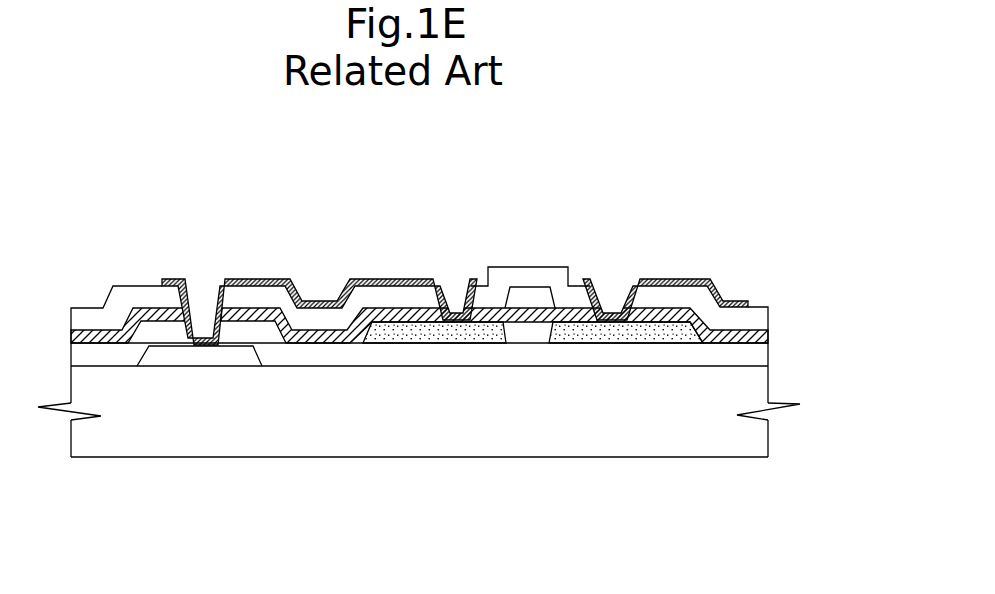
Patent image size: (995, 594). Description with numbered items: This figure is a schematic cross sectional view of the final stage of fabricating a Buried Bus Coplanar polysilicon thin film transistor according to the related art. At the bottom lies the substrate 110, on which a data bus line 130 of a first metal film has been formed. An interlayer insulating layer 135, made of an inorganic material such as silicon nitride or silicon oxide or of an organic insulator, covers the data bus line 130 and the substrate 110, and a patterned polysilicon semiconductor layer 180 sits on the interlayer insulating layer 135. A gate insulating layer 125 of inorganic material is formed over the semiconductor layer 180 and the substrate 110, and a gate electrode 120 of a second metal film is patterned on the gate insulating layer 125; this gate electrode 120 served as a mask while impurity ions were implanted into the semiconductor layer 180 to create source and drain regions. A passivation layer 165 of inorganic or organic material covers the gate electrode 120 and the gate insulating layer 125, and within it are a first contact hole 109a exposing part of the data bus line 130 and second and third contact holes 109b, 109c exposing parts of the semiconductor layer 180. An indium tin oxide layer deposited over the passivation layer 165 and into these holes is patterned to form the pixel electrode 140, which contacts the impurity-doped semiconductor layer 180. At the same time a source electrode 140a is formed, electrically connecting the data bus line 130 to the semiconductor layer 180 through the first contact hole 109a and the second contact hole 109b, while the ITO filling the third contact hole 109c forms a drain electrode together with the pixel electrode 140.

The substrate 110 is at (750, 437).
The data bus line 130 is at (197, 352).
The interlayer insulating layer 135 is at (402, 354).
The semiconductor layer 180 is at (590, 333).
The gate insulating layer 125 is at (738, 336).
The gate electrode 120 is at (528, 288).
The passivation layer 165 is at (142, 285).
The pixel electrode 140 is at (693, 279).
The source electrode 140a is at (273, 280).
The first contact hole 109a is at (203, 278).
The second contact hole 109b is at (452, 262).
The third contact hole 109c is at (621, 275).